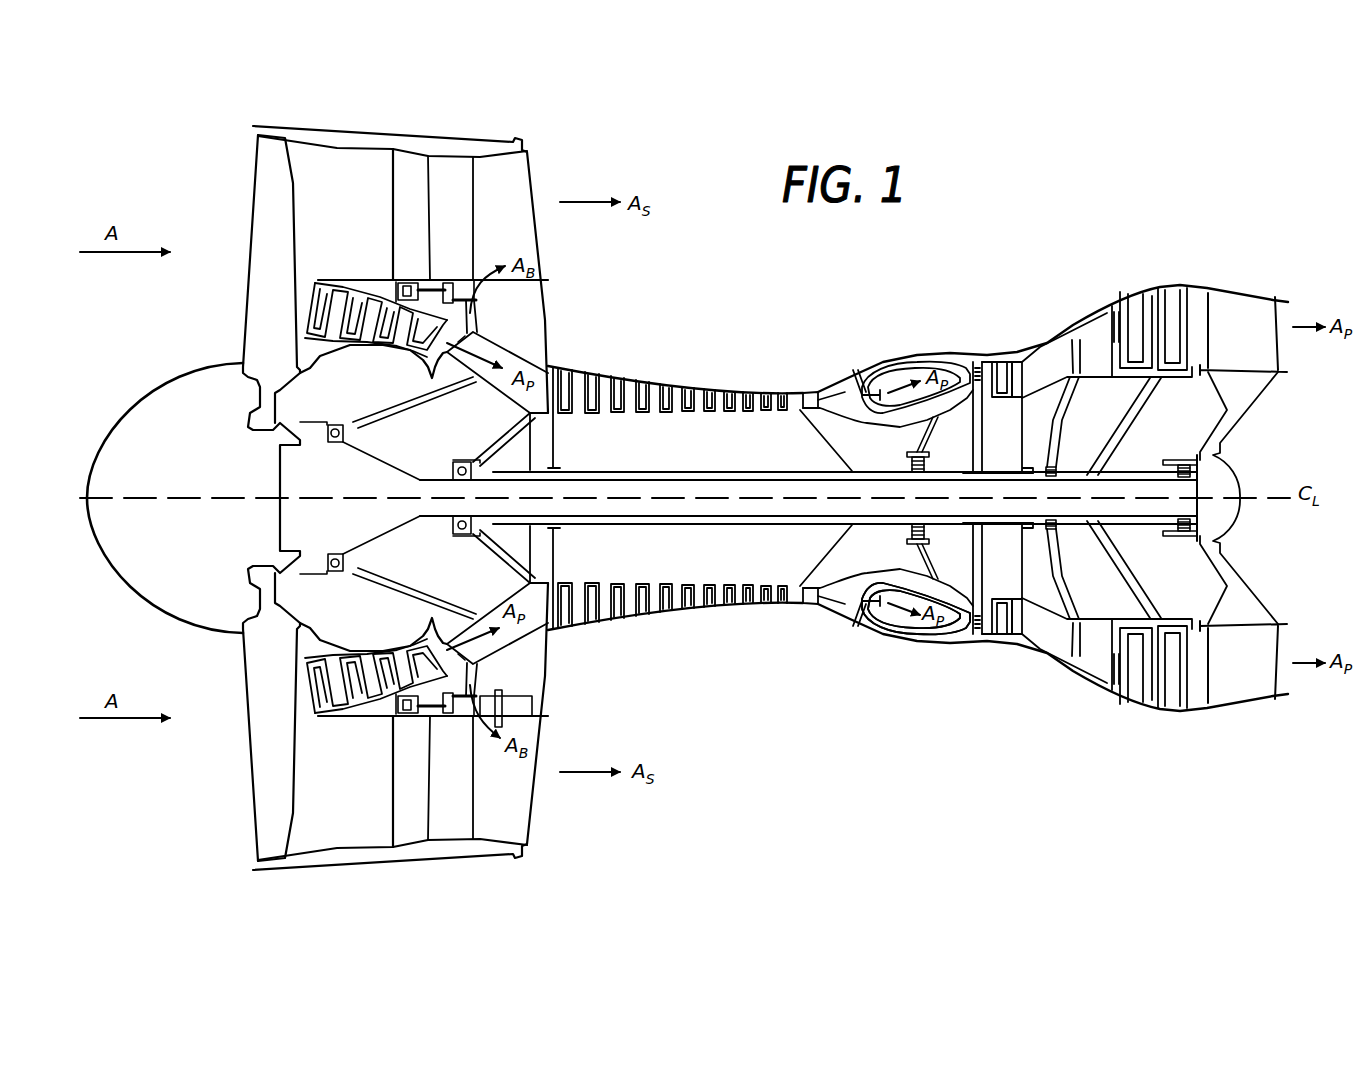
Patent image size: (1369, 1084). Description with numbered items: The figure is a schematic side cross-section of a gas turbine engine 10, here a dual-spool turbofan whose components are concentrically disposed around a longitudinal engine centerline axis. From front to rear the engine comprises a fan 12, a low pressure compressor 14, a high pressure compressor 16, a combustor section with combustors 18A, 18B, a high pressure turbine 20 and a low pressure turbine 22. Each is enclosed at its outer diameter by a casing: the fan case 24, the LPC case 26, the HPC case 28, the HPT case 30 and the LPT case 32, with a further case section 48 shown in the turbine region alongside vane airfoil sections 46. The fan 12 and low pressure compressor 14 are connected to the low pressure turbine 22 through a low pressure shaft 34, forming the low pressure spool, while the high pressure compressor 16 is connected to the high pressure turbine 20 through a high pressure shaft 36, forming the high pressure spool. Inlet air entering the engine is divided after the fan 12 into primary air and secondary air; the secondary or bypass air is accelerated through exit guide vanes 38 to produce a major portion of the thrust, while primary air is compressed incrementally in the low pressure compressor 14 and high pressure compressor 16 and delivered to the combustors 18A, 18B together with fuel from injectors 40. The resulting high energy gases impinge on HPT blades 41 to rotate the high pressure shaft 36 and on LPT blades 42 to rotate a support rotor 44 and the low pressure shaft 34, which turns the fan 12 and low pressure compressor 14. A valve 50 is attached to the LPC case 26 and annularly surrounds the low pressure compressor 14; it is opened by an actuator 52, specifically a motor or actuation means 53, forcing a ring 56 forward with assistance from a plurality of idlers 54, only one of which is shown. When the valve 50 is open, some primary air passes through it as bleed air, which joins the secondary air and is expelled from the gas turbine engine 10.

The gas turbine engine 10 is at (1057, 203).
The fan 12 is at (245, 778).
The low pressure compressor 14 is at (384, 712).
The high pressure compressor 16 is at (730, 628).
The combustor 18A is at (905, 622).
The combustor 18B is at (958, 357).
The high pressure turbine 20 is at (991, 660).
The low pressure turbine 22 is at (1118, 712).
The fan case 24 is at (362, 142).
The LPC case 26 is at (372, 287).
The HPC case 28 is at (700, 390).
The HPT case 30 is at (1037, 350).
The LPT case 32 is at (1190, 287).
The low pressure shaft 34 is at (775, 490).
The high pressure shaft 36 is at (858, 618).
The exit guide vanes 38 is at (463, 240).
The injectors 40 is at (871, 375).
The HPT blades 41 is at (1019, 634).
The LPT blades 42 is at (1133, 322).
The support rotor 44 is at (1128, 434).
The vane airfoil sections 46 is at (1117, 337).
The case section 48 is at (1148, 290).
The valve 50 is at (500, 318).
The actuator 52 is at (520, 690).
The motor or actuation means 53 is at (535, 708).
The idler 54 is at (418, 290).
The ring 56 is at (460, 300).